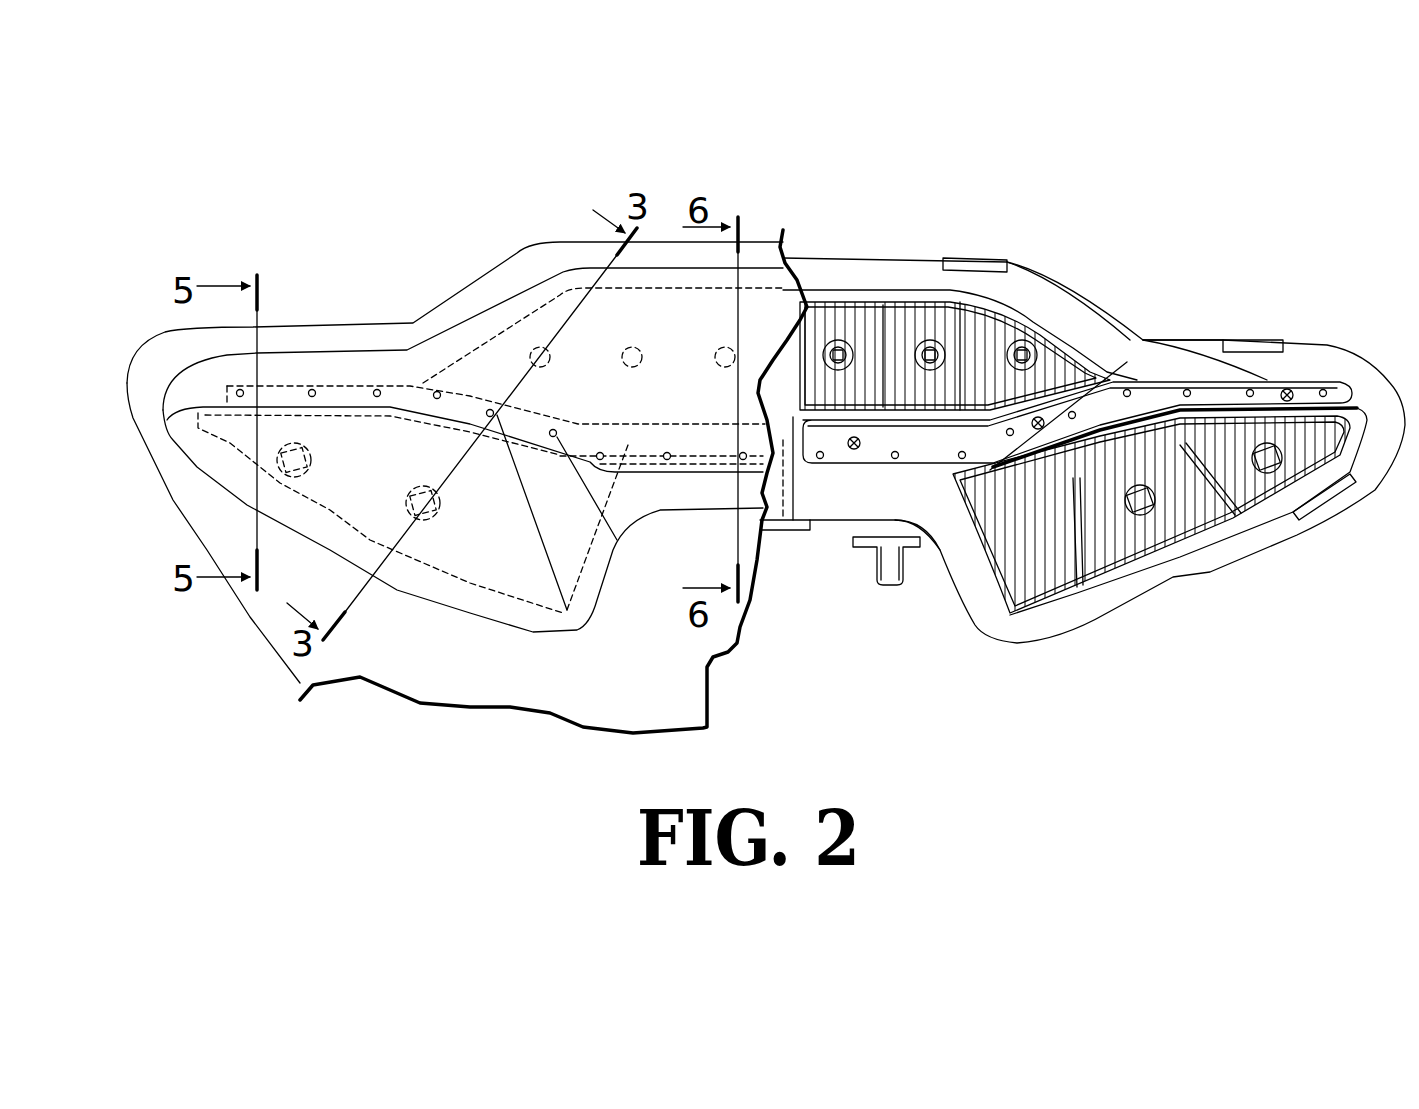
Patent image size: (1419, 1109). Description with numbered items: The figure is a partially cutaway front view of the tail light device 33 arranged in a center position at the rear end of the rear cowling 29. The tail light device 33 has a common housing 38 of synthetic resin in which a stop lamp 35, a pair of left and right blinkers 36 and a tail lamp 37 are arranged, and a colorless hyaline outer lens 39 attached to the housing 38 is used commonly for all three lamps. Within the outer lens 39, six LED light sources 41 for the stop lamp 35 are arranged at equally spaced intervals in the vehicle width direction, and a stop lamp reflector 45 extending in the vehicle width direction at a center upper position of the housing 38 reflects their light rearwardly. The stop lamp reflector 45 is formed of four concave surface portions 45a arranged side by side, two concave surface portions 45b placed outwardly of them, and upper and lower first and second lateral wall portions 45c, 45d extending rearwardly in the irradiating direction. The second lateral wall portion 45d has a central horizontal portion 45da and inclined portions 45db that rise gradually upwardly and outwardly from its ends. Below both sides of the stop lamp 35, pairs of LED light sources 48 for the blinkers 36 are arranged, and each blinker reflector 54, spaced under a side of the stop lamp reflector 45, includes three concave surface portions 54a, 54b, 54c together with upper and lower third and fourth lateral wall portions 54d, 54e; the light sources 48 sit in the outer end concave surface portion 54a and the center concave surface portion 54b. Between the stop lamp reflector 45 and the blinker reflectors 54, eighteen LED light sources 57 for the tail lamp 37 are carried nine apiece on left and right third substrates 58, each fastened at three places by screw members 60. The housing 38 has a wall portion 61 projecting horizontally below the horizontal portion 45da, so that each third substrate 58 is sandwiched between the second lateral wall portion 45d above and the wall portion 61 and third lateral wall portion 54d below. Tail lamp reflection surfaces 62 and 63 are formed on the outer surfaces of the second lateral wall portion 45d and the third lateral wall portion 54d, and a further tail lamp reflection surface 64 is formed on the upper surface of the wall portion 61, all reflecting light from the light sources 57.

The rear cowling 29 is at (258, 610).
The tail light device 33 is at (450, 330).
The stop lamp 35 is at (566, 268).
The blinker 36 is at (463, 622).
The tail lamp 37 is at (695, 470).
The housing 38 is at (880, 262).
The outer lens 39 is at (672, 399).
The light source for the stop lamp 41 is at (538, 345).
The stop lamp reflector 45 is at (1030, 300).
The concave surface portion 45a is at (960, 305).
The concave surface portion 45b is at (1043, 333).
The first lateral wall portion 45c is at (842, 300).
The second lateral wall portion 45d is at (893, 407).
The horizontal portion 45da is at (805, 523).
The inclined portion 45db is at (498, 443).
The light source for the blinker 48 is at (312, 447).
The blinker reflector 54 is at (480, 596).
The concave surface portion 54a is at (1267, 427).
The concave surface portion 54b is at (1200, 513).
The concave surface portion 54c is at (1017, 593).
The third lateral wall portion 54d is at (1180, 410).
The fourth lateral wall portion 54e is at (1110, 583).
The light source for the tail lamp 57 is at (240, 393).
The third substrate 58 is at (334, 390).
The screw member 60 is at (862, 445).
The wall portion 61 is at (925, 468).
The tail lamp reflection surface 62 is at (963, 420).
The tail lamp reflection surface 63 is at (1135, 422).
The tail lamp reflection surface 64 is at (923, 550).